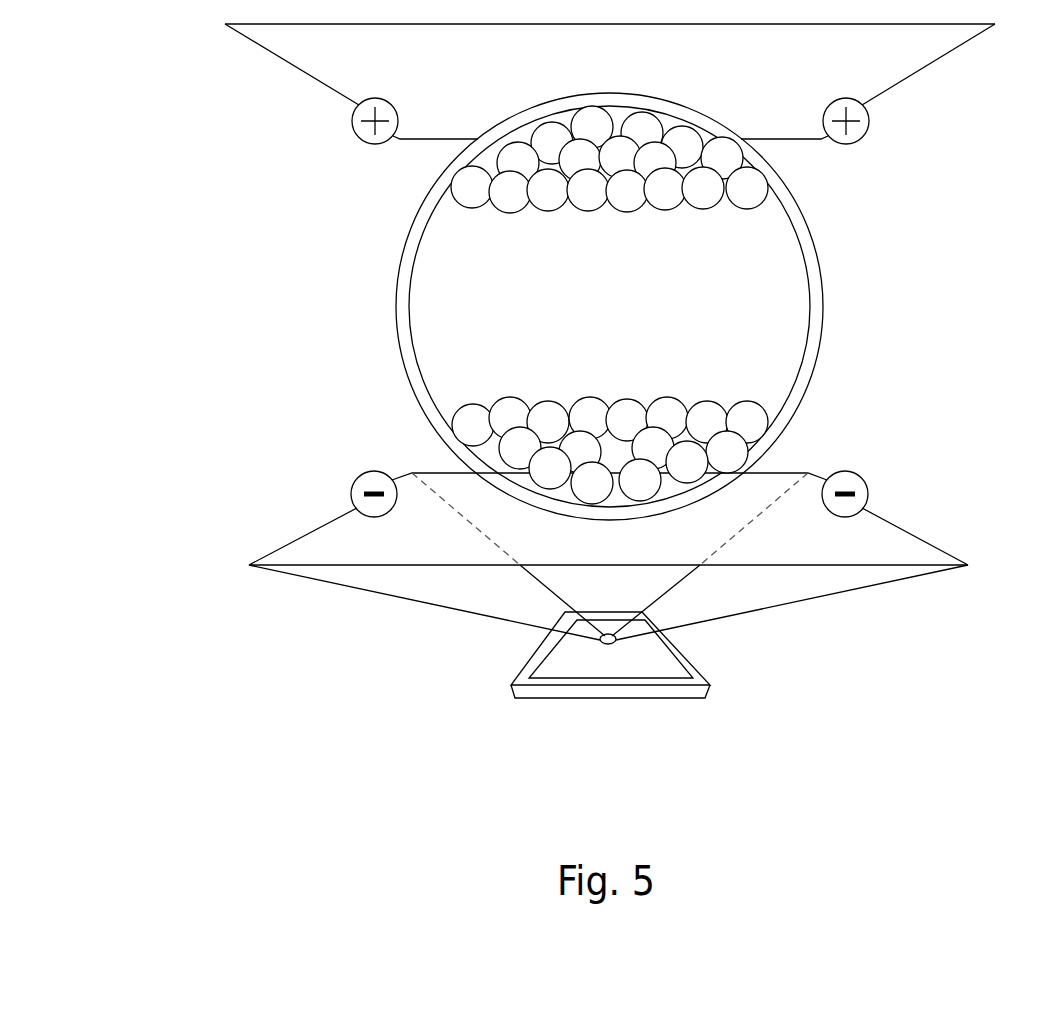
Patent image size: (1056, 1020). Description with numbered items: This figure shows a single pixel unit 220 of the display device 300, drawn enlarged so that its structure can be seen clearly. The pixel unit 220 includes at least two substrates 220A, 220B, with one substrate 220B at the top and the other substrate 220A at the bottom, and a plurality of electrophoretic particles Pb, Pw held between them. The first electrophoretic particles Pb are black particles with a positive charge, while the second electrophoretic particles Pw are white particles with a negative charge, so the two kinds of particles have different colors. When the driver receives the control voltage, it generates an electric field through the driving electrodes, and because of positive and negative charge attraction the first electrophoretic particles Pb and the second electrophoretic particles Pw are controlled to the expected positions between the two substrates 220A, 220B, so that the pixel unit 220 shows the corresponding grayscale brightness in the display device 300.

The pixel unit 220 is at (307, 273).
The substrate 220A is at (910, 528).
The substrate 220B is at (922, 72).
The second electrophoretic particles Pw is at (762, 183).
The first electrophoretic particles Pb is at (762, 430).
The display device 300 is at (703, 683).